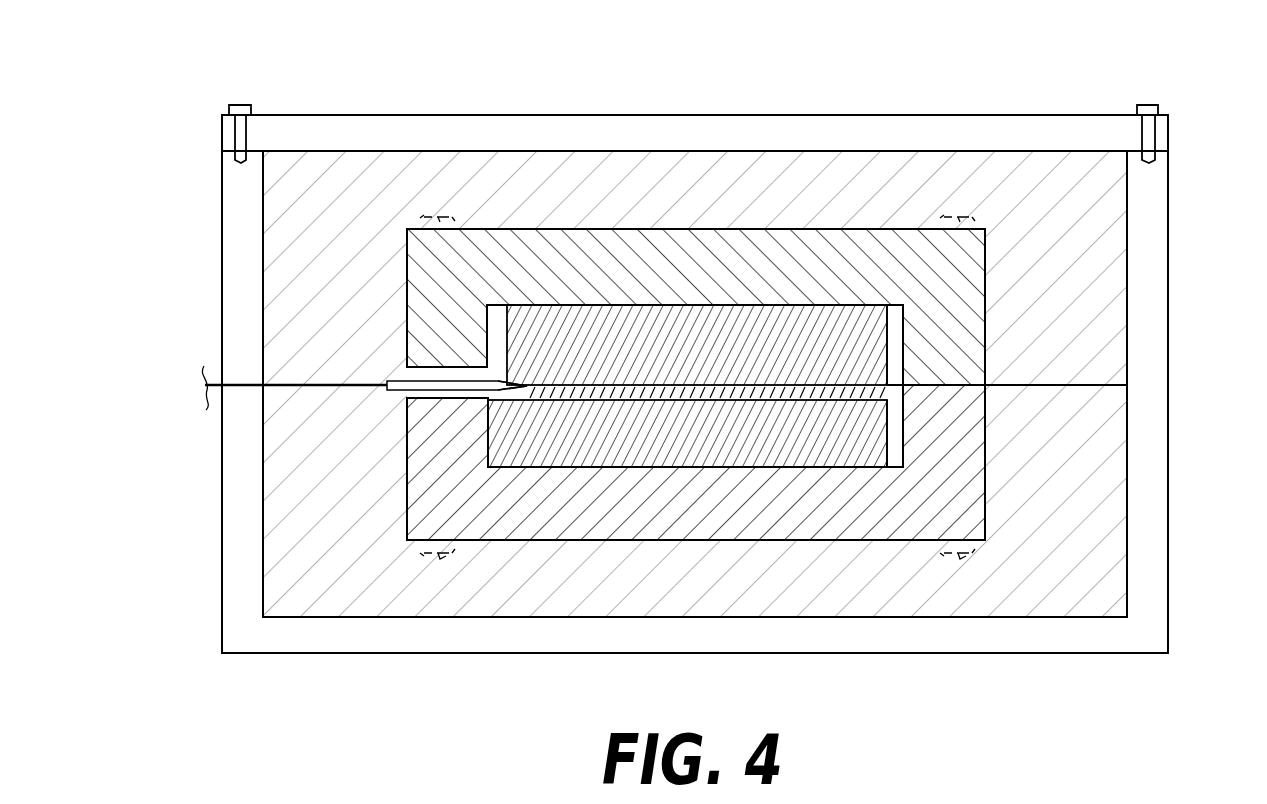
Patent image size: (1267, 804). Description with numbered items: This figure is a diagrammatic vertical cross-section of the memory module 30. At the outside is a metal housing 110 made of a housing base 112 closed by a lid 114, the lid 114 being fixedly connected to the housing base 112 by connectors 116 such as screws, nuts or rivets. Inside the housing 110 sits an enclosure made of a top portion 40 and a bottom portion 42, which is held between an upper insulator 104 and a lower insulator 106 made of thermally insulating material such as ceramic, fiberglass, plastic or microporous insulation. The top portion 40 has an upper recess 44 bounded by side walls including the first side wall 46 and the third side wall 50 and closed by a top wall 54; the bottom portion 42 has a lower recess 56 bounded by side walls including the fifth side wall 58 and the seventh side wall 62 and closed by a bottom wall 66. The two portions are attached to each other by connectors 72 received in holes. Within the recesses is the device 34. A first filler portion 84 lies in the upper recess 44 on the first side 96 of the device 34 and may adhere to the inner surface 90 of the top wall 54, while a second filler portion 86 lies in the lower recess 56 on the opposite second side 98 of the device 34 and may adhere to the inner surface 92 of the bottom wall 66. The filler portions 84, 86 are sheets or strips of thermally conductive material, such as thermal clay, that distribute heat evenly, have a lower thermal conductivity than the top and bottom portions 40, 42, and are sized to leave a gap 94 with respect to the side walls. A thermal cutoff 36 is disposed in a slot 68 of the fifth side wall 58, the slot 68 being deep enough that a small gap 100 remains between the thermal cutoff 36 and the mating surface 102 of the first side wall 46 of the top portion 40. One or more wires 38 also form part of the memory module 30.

The memory module 30 is at (802, 104).
The device 34 is at (538, 500).
The thermal cutoff 36 is at (395, 380).
The wire 38 is at (328, 383).
The top portion 40 is at (1000, 258).
The bottom portion 42 is at (1015, 550).
The upper recess 44 is at (900, 315).
The first side wall 46 is at (421, 258).
The third side wall 50 is at (973, 356).
The top wall 54 is at (610, 240).
The lower recess 56 is at (900, 465).
The fifth side wall 58 is at (425, 498).
The seventh side wall 62 is at (972, 503).
The bottom wall 66 is at (790, 518).
The slot 68 is at (412, 398).
The connector 72 is at (440, 214).
The first filler portion 84 is at (835, 345).
The second filler portion 86 is at (857, 440).
The inner surface 90 is at (698, 300).
The inner surface 92 is at (600, 400).
The gap 94 is at (903, 415).
The first side 96 is at (780, 345).
The second side 98 is at (727, 400).
The small gap 100 is at (425, 367).
The mating surface 102 is at (430, 366).
The upper insulator 104 is at (1108, 243).
The lower insulator 106 is at (1108, 545).
The housing 110 is at (1176, 330).
The housing base 112 is at (1148, 598).
The lid 114 is at (997, 127).
The connector 116 is at (1152, 104).